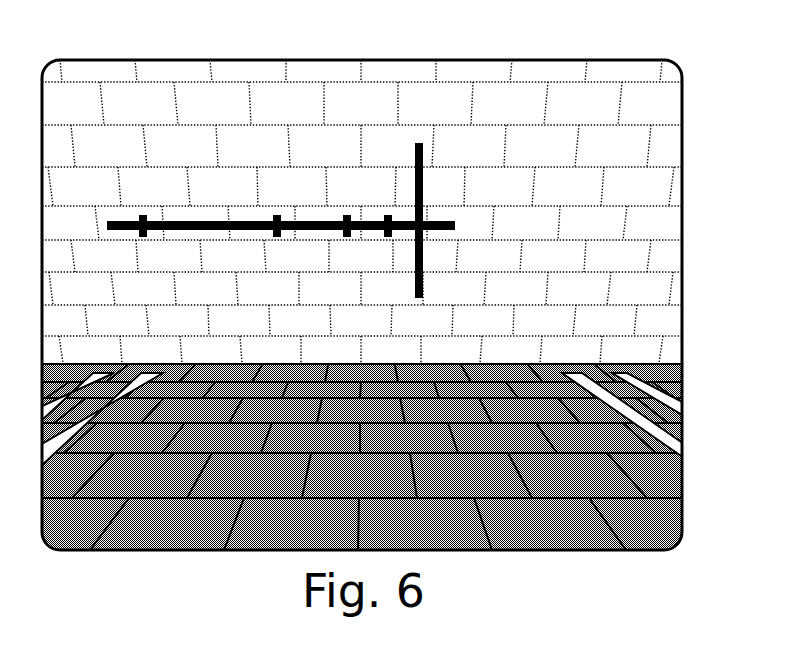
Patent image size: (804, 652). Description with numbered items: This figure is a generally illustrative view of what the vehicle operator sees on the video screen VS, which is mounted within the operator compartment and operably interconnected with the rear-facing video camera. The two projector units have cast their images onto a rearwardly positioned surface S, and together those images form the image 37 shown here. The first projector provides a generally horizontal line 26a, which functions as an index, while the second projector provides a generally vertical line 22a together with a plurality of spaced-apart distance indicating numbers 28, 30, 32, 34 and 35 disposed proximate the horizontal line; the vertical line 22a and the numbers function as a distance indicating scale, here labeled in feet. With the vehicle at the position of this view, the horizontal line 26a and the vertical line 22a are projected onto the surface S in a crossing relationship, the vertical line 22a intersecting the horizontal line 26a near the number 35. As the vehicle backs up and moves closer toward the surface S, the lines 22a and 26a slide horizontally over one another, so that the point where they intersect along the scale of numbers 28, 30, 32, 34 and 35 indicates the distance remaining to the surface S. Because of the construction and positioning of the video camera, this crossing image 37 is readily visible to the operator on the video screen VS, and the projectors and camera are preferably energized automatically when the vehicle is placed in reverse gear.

The video screen VS is at (156, 58).
The surface S is at (231, 73).
The distance indicating number 28 is at (127, 152).
The distance indicating number 30 is at (271, 150).
The distance indicating number 32 is at (345, 150).
The distance indicating number 34 is at (387, 150).
The distance indicating number 35 is at (432, 180).
The image 37 is at (310, 150).
The horizontal line 26a is at (177, 233).
The vertical line 22a is at (423, 267).